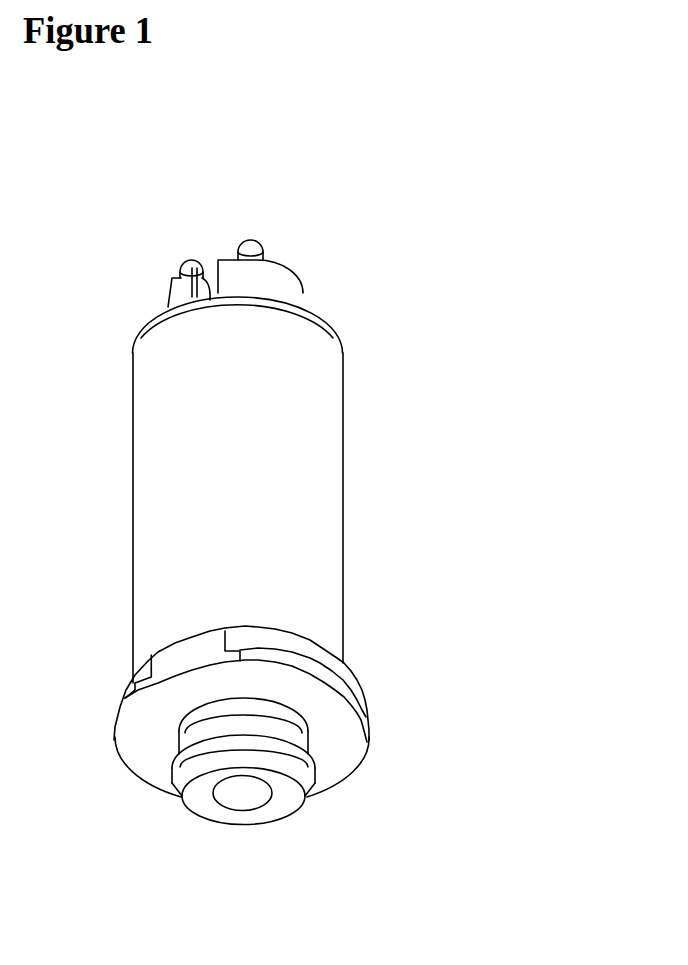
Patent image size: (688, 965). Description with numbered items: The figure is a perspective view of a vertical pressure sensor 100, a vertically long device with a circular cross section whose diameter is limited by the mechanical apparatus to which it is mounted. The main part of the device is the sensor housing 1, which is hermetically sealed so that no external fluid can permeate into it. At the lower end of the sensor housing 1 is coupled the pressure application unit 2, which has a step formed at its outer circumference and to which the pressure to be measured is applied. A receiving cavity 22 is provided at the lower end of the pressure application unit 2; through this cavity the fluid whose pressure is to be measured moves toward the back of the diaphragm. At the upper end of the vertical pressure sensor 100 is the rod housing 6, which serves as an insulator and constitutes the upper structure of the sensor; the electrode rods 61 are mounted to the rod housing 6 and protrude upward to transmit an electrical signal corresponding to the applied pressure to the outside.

The vertical pressure sensor 100 is at (505, 139).
The sensor housing 1 is at (327, 437).
The pressure application unit 2 is at (280, 759).
The receiving cavity 22 is at (247, 802).
The rod housing 6 is at (263, 245).
The electrode rod 61 is at (250, 241).